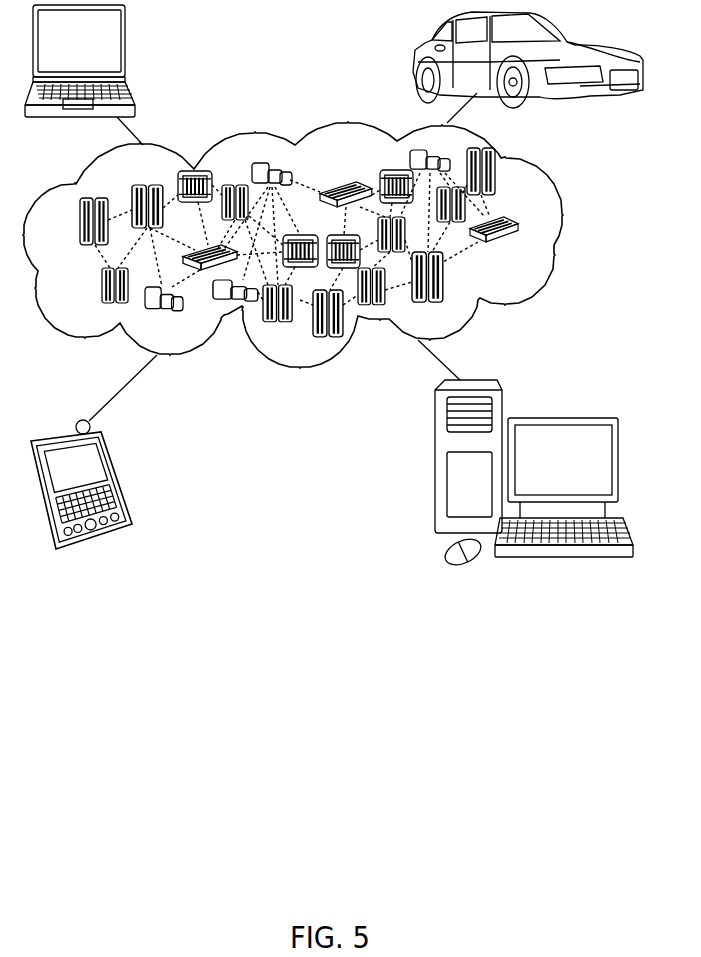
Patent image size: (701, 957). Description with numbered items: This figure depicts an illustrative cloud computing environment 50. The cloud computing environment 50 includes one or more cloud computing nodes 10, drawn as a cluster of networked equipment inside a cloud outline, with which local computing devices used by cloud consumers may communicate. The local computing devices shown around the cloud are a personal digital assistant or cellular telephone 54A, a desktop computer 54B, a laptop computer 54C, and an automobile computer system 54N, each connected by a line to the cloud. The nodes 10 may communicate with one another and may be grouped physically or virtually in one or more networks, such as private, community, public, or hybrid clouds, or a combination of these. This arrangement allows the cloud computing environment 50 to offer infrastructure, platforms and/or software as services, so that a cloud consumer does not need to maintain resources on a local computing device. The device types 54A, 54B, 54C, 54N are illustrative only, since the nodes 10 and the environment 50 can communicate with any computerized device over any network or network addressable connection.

The cloud computing environment 50 is at (562, 229).
The cloud computing node 10 is at (522, 249).
The personal digital assistant or cellular telephone 54A is at (121, 481).
The desktop computer 54B is at (559, 418).
The laptop computer 54C is at (127, 51).
The automobile computer system 54N is at (417, 62).